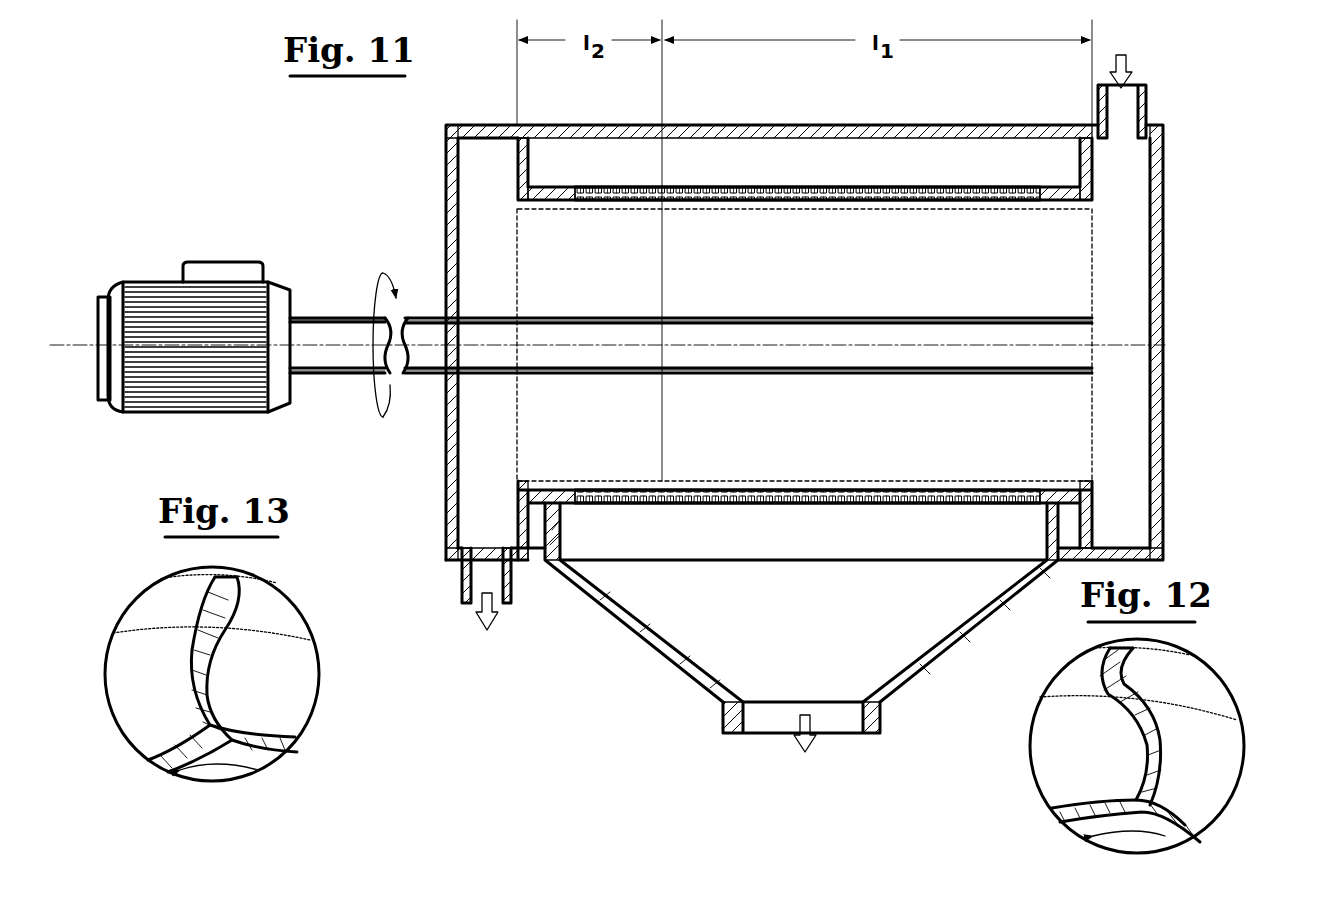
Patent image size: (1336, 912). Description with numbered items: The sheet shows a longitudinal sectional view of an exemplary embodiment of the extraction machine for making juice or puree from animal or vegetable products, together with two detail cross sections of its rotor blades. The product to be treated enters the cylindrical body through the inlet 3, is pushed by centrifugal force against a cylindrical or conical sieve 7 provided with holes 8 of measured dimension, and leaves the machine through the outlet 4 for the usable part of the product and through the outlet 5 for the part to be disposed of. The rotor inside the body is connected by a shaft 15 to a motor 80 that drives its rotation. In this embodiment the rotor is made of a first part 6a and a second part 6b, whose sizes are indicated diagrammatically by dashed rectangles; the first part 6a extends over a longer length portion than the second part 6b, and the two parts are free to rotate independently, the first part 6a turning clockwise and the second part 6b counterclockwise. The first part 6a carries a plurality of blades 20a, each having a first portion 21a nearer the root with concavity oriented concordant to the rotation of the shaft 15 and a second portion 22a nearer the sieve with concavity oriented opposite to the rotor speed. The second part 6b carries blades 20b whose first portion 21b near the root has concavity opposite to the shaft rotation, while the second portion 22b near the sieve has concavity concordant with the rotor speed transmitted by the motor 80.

In FIG. 11, the motor 80 is at (170, 262).
In FIG. 11, the shaft 15 is at (345, 316).
In FIG. 11, the second part of the rotor 6b is at (497, 222).
In FIG. 11, the first part of the rotor 6a is at (1105, 238).
In FIG. 11, the inlet 3 is at (1143, 100).
In FIG. 11, the sieve 7 is at (742, 166).
In FIG. 11, the holes 8 is at (715, 186).
In FIG. 11, the outlet 5 is at (462, 592).
In FIG. 11, the outlet 4 is at (818, 718).
In FIG. 12, the blades 20a is at (1217, 697).
In FIG. 12, the second portion 22a is at (1142, 695).
In FIG. 12, the first portion 21a is at (1160, 730).
In FIG. 13, the blades 20b is at (253, 645).
In FIG. 13, the second portion 22b is at (242, 603).
In FIG. 13, the first portion 21b is at (205, 660).